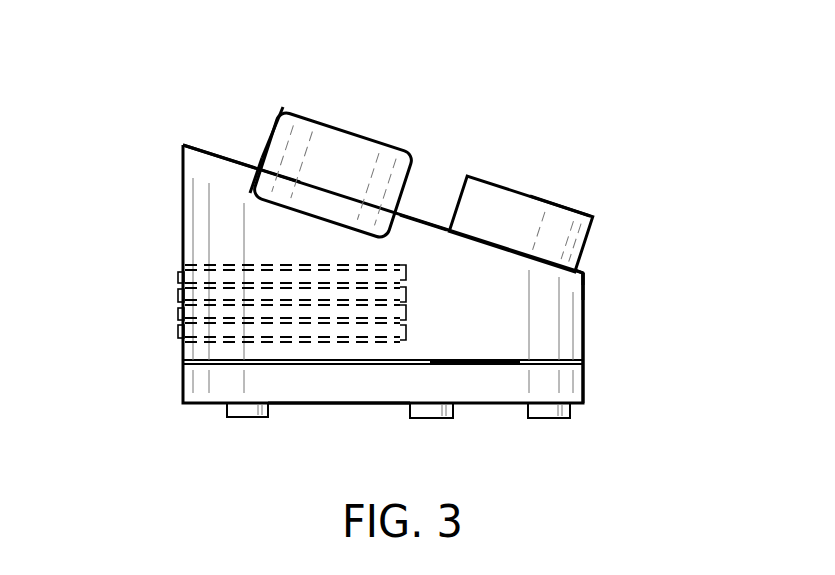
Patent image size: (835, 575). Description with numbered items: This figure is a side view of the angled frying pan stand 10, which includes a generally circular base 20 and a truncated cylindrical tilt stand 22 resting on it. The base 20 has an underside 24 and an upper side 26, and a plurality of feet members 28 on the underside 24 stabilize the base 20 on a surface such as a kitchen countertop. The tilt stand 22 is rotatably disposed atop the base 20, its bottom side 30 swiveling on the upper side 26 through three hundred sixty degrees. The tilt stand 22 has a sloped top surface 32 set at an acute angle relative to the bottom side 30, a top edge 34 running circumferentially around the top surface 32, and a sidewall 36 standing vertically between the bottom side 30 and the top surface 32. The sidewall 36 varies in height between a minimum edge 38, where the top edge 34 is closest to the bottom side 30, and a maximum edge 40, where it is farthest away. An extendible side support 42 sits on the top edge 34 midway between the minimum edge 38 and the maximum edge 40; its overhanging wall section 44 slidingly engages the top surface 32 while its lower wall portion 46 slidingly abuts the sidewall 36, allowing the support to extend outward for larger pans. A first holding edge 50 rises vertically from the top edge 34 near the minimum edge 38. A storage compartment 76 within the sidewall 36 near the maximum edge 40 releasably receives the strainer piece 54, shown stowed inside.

The angled frying pan stand 10 is at (622, 89).
The base 20 is at (215, 380).
The tilt stand 22 is at (215, 243).
The underside 24 is at (315, 406).
The upper side 26 is at (462, 350).
The feet members 28 is at (241, 410).
The bottom side 30 is at (389, 380).
The sloped top surface 32 is at (424, 198).
The top edge 34 is at (487, 238).
The sidewall 36 is at (542, 320).
The minimum edge 38 is at (585, 272).
The maximum edge 40 is at (183, 145).
The extendible side supports 42 is at (330, 140).
The overhanging wall section 44 is at (265, 130).
The lower wall portion 46 is at (257, 157).
The first holding edge 50 is at (557, 217).
The strainer piece 54 is at (178, 308).
The storage compartment 76 is at (165, 293).